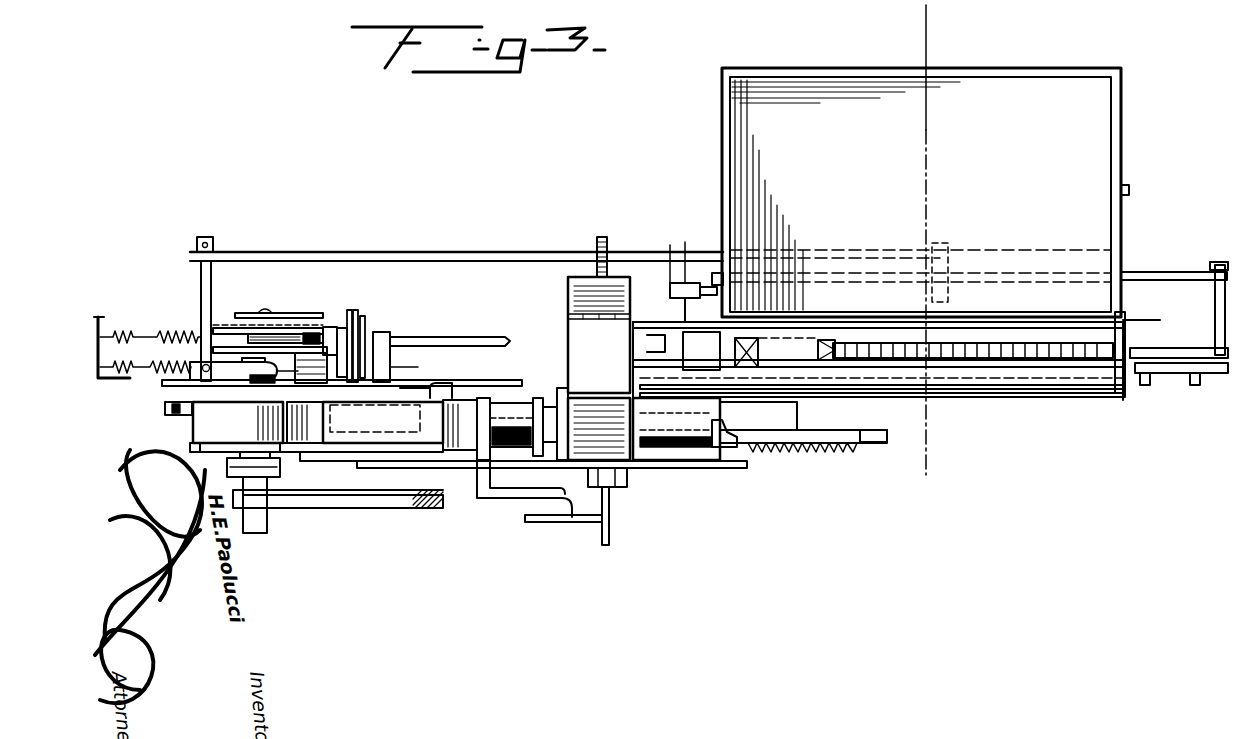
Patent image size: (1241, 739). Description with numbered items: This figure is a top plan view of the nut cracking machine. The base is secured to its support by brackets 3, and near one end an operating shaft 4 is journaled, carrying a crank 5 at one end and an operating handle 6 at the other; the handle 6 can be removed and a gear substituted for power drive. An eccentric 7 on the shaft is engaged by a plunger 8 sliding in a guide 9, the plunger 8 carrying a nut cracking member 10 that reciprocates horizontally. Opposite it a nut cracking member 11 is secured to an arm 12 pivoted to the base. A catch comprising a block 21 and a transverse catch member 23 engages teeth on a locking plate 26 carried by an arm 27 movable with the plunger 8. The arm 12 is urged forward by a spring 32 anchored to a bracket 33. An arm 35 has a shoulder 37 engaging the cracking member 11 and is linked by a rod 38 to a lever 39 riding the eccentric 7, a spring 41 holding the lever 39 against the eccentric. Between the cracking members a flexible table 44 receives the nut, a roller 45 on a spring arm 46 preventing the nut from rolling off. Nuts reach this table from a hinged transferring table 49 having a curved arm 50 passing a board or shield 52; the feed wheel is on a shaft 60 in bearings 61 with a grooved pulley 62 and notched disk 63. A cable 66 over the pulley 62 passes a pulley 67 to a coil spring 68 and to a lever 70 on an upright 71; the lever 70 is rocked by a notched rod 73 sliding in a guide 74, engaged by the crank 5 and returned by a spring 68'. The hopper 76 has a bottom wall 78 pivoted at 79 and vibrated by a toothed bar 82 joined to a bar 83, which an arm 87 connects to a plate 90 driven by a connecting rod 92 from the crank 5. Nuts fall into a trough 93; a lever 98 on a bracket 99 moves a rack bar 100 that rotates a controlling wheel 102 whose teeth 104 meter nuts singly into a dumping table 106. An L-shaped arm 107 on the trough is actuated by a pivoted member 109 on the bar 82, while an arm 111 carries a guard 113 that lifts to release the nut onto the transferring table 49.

The brackets 3 is at (282, 470).
The operating shaft 4 is at (250, 533).
The crank 5 is at (224, 386).
The operating handle 6 is at (920, 37).
The eccentric 7 is at (238, 422).
The plunger 8 is at (320, 446).
The guide 9 is at (375, 421).
The nut cracking member 10 is at (527, 408).
The nut cracking member 11 is at (722, 412).
The arm 12 is at (462, 390).
The block 21 is at (620, 488).
The catch member 23 is at (610, 535).
The locking plate 26 is at (552, 522).
The arm 27 is at (510, 500).
The spring 32 is at (752, 452).
The bracket 33 is at (875, 430).
The arm 35 is at (724, 448).
The shoulder 37 is at (732, 450).
The rod 38 is at (470, 478).
The lever 39 is at (182, 415).
The spring 41 is at (812, 430).
The table 44 is at (590, 430).
The roller 45 is at (625, 460).
The spring arm 46 is at (512, 475).
The nut transferring table 49 is at (568, 331).
The curved arm 50 is at (592, 248).
The board or shield 52 is at (568, 298).
The shaft 60 is at (451, 337).
The bearings 61 is at (391, 335).
The grooved pulley 62 is at (367, 330).
The notched disk 63 is at (356, 315).
The cable 66 is at (417, 368).
The pulley 67 is at (332, 378).
The coil spring 68 is at (111, 370).
The spring 68' is at (150, 331).
The lever 70 is at (320, 325).
The upright 71 is at (383, 422).
The notched rod 73 is at (283, 332).
The guide 74 is at (228, 325).
The hopper 76 is at (1000, 70).
The bottom wall 78 is at (1020, 155).
The pivot 79 is at (1130, 190).
The bar 82 is at (1140, 272).
The bar 83 is at (1157, 348).
The arm 87 is at (962, 252).
The plate 90 is at (1020, 262).
The connecting rod 92 is at (392, 252).
The trough 93 is at (1000, 333).
The lever 98 is at (1180, 376).
The bracket 99 is at (1144, 384).
The rack bar 100 is at (1092, 380).
The controlling wheel 102 is at (805, 338).
The teeth 104 is at (832, 342).
The dumping table 106 is at (645, 335).
The L-shaped arm 107 is at (670, 245).
The pivoted member 109 is at (698, 297).
The arm 111 is at (704, 351).
The guard 113 is at (652, 332).